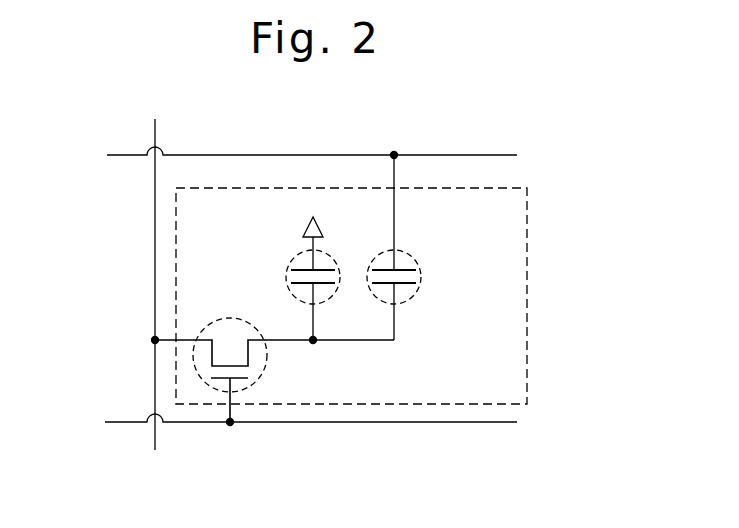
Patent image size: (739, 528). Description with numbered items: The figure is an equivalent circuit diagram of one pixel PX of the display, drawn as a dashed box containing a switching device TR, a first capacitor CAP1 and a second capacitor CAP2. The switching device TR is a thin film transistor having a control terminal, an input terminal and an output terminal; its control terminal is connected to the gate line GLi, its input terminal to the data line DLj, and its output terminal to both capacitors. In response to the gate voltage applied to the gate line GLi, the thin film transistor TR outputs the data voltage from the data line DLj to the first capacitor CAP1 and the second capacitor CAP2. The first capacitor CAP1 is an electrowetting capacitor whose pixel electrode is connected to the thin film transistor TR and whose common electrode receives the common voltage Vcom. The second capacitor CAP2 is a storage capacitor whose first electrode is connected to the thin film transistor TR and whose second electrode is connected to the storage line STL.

The pixel PX is at (527, 286).
The storage line STL is at (292, 156).
The gate line GLi is at (294, 424).
The data line DLj is at (154, 300).
The common voltage Vcom is at (314, 216).
The first capacitor CAP1 is at (285, 273).
The second capacitor CAP2 is at (421, 275).
The switching device TR is at (267, 358).